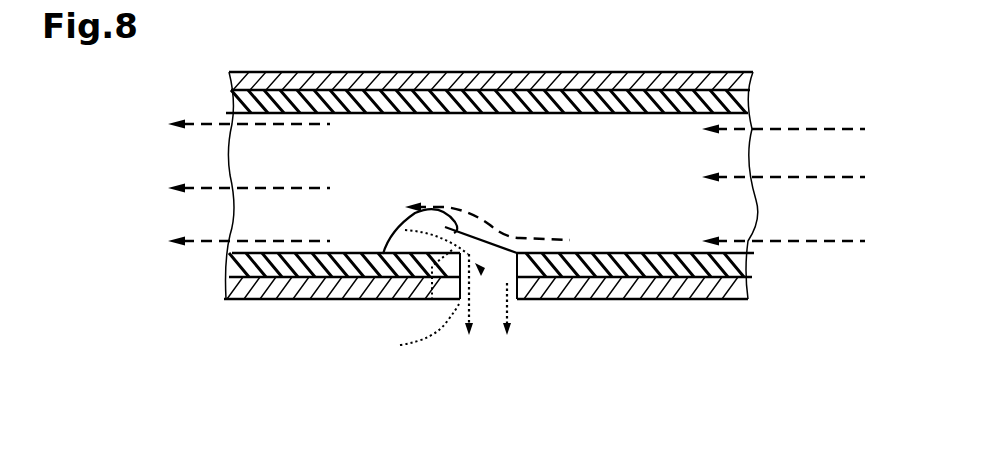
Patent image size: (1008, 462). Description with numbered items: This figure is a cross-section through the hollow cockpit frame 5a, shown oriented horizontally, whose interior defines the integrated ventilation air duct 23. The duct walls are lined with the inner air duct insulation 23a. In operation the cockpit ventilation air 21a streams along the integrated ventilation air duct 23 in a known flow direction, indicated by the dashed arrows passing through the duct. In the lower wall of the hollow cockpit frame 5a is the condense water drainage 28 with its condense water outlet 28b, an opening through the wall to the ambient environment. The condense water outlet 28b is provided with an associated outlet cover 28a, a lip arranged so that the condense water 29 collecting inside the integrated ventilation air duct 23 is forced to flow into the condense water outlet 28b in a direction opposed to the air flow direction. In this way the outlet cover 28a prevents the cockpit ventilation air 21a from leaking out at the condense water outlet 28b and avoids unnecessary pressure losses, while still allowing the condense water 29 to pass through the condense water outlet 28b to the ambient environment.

The hollow cockpit frame 5a is at (491, 159).
The integrated ventilation air duct 23 is at (488, 66).
The inner air duct insulation 23a is at (383, 112).
The cockpit ventilation air 21a is at (203, 124).
The condense water drainage 28 is at (490, 296).
The outlet cover 28a is at (383, 254).
The condense water outlet 28b is at (517, 300).
The condense water 29 is at (432, 300).